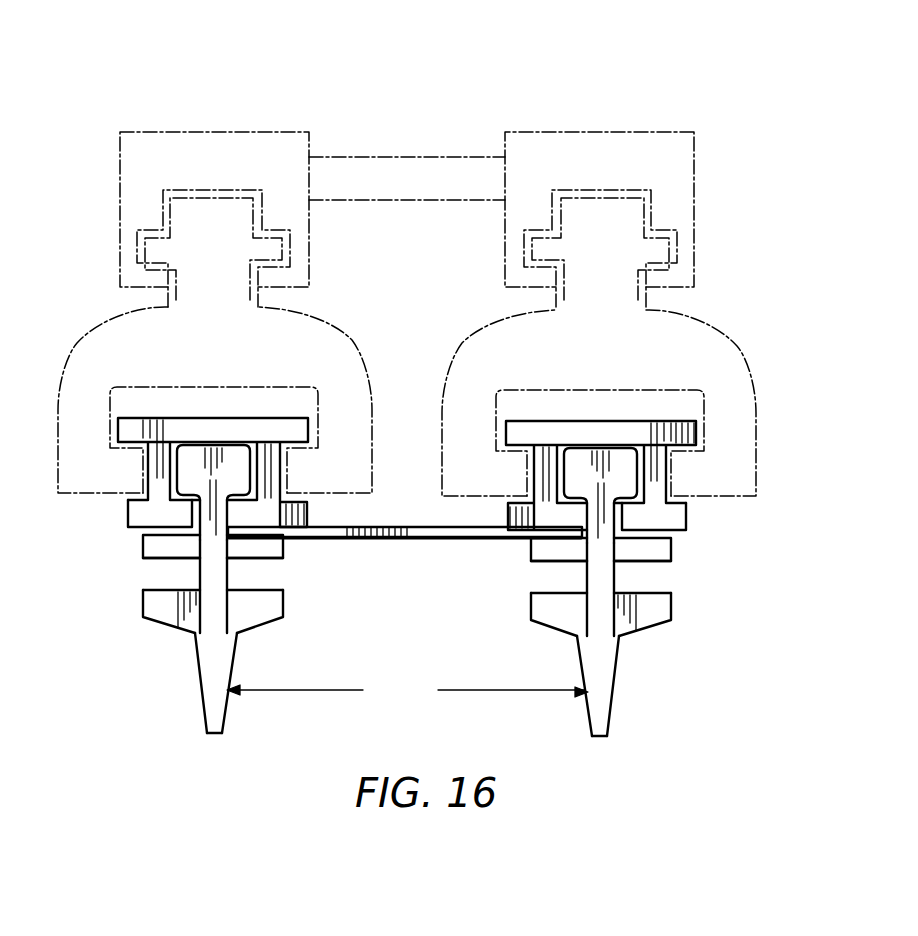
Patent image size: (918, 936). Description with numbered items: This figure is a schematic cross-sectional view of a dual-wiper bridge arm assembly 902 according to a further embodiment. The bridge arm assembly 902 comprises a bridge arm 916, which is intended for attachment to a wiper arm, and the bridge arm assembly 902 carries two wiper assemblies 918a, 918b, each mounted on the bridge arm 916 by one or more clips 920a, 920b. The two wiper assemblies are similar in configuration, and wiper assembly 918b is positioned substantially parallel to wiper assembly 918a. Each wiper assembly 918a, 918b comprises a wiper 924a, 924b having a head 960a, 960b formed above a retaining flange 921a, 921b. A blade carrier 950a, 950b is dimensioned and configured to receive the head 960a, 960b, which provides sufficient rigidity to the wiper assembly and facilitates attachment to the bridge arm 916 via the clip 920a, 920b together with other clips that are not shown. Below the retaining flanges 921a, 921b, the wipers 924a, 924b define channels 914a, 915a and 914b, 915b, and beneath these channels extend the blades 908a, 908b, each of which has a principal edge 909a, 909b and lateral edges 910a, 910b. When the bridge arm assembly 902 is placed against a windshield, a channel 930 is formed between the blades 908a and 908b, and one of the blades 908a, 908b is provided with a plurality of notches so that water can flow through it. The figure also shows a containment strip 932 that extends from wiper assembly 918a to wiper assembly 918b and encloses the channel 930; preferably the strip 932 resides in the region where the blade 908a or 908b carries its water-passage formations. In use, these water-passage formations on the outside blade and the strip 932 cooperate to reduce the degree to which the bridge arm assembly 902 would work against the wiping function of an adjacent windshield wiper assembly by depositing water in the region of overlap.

The bridge arm assembly 902 is at (357, 96).
The bridge arm 916 is at (448, 157).
The clip 920a is at (68, 368).
The clip 920b is at (722, 330).
The blade carrier 950a is at (247, 418).
The blade carrier 950b is at (642, 422).
The head 960a is at (213, 492).
The head 960b is at (600, 495).
The wiper assembly 918a is at (120, 533).
The wiper assembly 918b is at (700, 545).
The retaining flange 921a is at (248, 551).
The retaining flange 921b is at (560, 554).
The channel 915a is at (251, 589).
The channel 915b is at (560, 591).
The channel 914a is at (159, 607).
The channel 914b is at (662, 616).
The lateral edge 910a is at (187, 687).
The lateral edge 910b is at (627, 680).
The wiper 924a is at (205, 611).
The wiper 924b is at (607, 617).
The blade 908a is at (213, 668).
The blade 908b is at (607, 682).
The principal edge 909a is at (227, 783).
The principal edge 909b is at (639, 776).
The channel 930 is at (407, 694).
The containment strip 932 is at (410, 538).